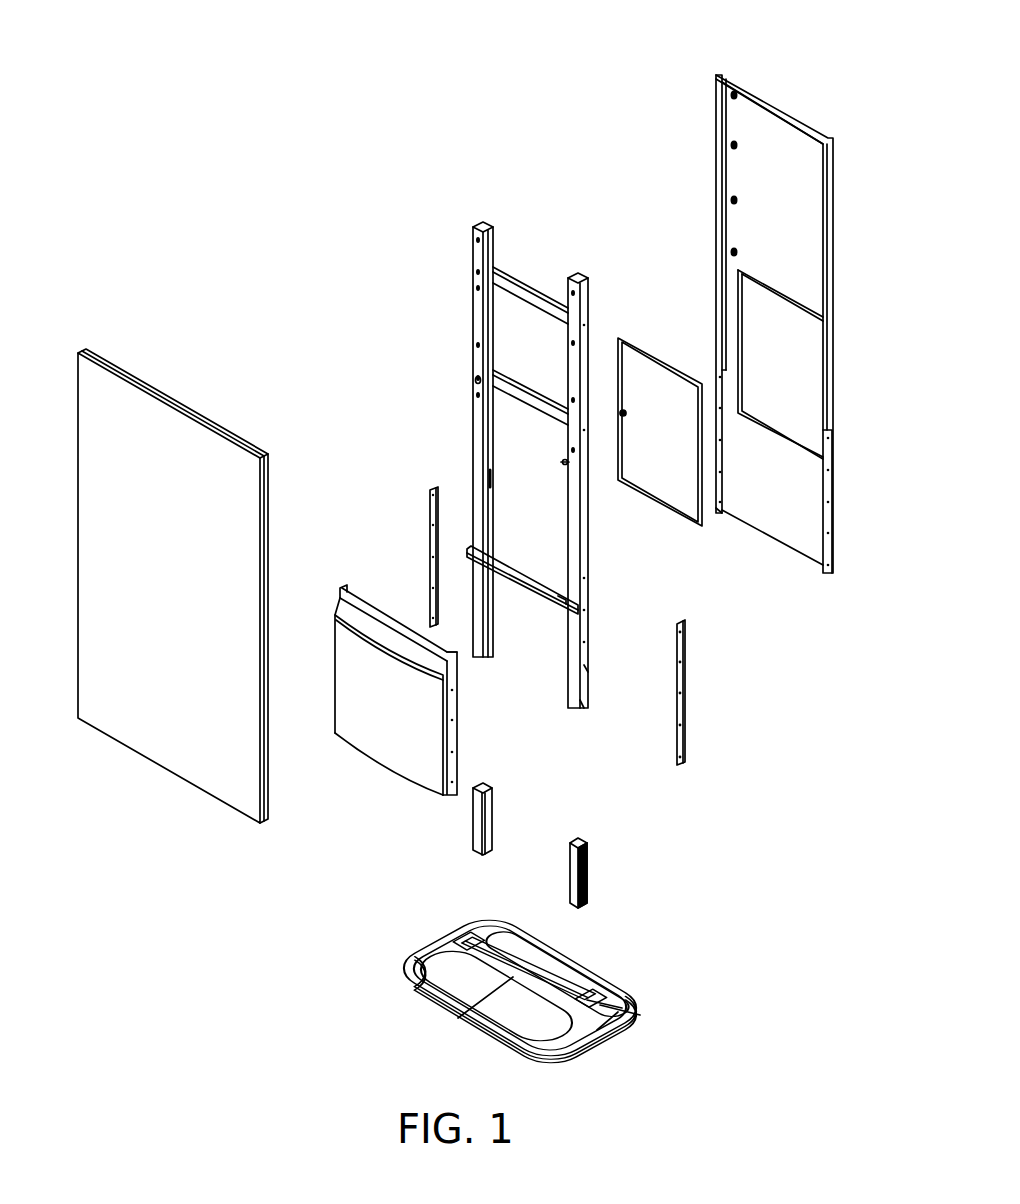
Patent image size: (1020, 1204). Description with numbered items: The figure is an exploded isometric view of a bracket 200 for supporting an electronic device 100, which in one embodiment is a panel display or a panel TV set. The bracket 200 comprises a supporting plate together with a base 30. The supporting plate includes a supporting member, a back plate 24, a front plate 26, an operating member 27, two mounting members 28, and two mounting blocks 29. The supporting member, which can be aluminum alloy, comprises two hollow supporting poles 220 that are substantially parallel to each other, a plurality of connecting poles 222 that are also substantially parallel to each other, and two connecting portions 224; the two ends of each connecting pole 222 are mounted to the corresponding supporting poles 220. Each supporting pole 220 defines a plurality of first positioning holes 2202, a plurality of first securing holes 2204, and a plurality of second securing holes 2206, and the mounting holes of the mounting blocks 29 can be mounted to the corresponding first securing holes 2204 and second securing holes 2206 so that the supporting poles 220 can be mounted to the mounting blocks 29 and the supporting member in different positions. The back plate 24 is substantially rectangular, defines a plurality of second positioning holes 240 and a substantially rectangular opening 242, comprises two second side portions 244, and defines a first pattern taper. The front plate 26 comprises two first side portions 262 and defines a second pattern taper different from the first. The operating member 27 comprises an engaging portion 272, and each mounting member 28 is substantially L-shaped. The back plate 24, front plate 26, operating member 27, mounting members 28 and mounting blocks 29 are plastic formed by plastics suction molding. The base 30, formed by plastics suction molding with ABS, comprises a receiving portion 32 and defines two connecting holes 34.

The electronic device 100 is at (142, 723).
The bracket 200 is at (673, 44).
The back plate 24 is at (742, 338).
The second positioning holes 240 is at (727, 196).
The supporting poles 220 is at (526, 478).
The connecting poles 222 is at (507, 372).
The first positioning holes 2202 is at (478, 381).
The engaging portion 272 is at (620, 412).
The connecting portions 224 is at (565, 462).
The operating member 27 is at (653, 429).
The opening 242 is at (797, 432).
The second side portions 244 is at (830, 518).
The second securing holes 2206 is at (585, 672).
The first securing holes 2204 is at (583, 706).
The mounting members 28 is at (683, 740).
The first side portions 262 is at (457, 750).
The front plate 26 is at (438, 710).
The mounting blocks 29 is at (577, 838).
The receiving portion 32 is at (547, 977).
The base 30 is at (546, 991).
The connecting holes 34 is at (638, 1018).